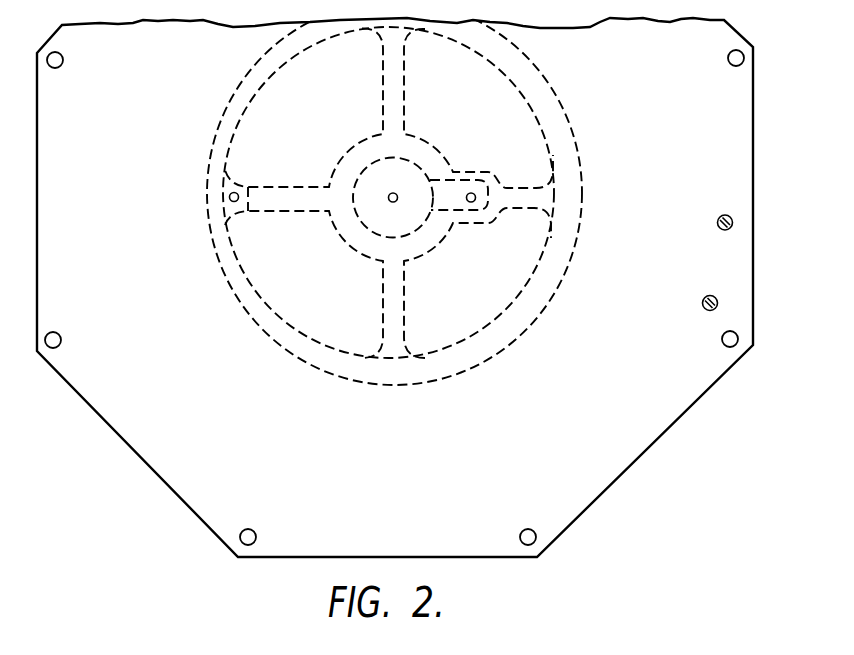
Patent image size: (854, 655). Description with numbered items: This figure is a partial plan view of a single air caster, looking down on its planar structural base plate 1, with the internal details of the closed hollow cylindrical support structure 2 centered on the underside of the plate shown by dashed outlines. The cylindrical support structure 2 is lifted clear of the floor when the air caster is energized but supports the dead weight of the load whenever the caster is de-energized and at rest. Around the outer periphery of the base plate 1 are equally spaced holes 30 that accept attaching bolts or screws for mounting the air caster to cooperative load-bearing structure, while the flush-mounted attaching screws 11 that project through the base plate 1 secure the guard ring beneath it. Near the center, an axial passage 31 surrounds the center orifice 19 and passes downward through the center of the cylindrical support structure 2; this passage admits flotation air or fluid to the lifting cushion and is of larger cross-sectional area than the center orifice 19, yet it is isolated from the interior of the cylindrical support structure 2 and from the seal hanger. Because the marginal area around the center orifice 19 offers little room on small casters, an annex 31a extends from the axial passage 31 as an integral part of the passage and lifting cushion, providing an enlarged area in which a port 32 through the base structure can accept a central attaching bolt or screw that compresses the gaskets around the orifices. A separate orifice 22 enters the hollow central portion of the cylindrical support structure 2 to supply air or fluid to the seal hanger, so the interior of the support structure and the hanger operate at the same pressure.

The planar structural base plate 1 is at (623, 473).
The closed hollow cylindrical support structure 2 is at (544, 311).
The attaching screw 11 is at (733, 222).
The center orifice 19 is at (393, 193).
The orifice 22 is at (229, 200).
The holes 30 is at (536, 535).
The axial passage 31 is at (373, 218).
The annex 31a is at (453, 192).
The port 32 is at (470, 203).